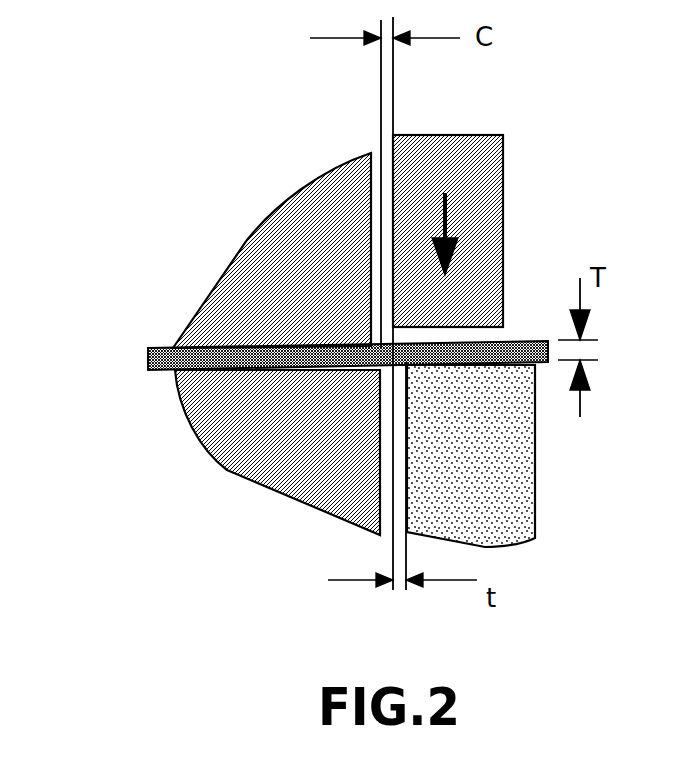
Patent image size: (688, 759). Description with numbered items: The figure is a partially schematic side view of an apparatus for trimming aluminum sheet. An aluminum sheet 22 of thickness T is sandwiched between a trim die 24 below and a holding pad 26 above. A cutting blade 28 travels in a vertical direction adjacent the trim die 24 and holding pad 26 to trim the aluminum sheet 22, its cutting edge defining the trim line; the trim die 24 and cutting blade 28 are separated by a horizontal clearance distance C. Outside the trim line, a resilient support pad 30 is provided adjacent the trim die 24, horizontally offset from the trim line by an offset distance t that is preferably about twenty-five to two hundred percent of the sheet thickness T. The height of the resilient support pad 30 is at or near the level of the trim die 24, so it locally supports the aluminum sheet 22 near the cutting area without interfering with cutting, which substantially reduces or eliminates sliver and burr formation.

The aluminum sheet 22 is at (147, 354).
The trim die 24 is at (235, 457).
The holding pad 26 is at (268, 258).
The cutting blade 28 is at (482, 213).
The resilient support pad 30 is at (492, 478).